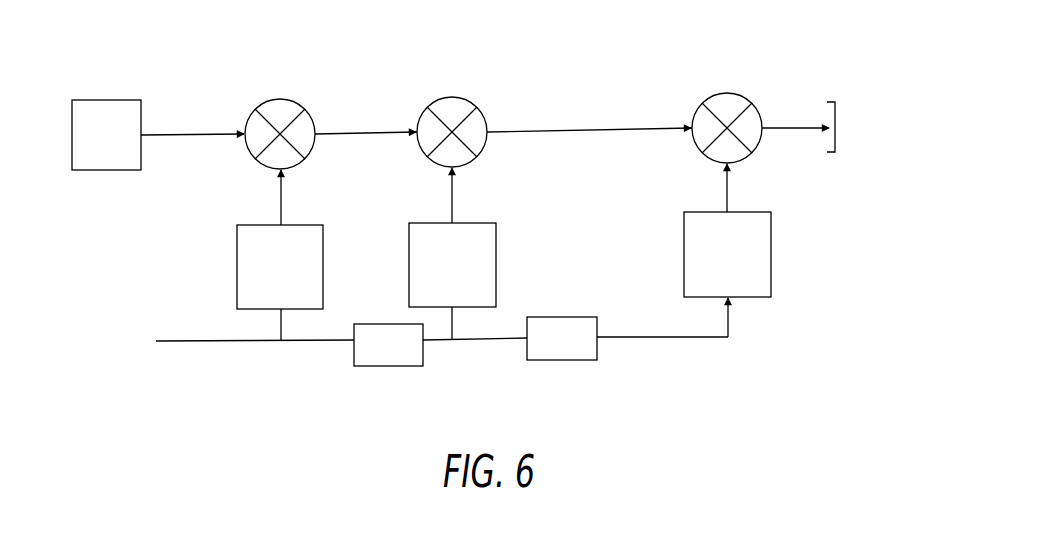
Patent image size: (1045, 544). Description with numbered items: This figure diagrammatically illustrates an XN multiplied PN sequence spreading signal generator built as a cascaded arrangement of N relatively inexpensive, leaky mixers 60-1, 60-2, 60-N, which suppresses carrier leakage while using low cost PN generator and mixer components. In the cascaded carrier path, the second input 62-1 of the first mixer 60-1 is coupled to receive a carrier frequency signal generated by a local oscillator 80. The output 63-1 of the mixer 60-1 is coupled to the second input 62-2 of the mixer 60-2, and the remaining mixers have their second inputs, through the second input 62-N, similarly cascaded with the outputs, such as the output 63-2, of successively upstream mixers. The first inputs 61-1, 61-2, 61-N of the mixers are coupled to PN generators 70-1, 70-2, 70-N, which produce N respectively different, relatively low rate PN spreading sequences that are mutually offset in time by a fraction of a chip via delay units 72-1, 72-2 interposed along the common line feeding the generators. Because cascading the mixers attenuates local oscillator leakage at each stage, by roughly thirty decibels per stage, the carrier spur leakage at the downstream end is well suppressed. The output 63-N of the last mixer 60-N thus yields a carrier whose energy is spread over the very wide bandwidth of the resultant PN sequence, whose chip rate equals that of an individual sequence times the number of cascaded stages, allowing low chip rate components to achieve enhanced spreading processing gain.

The local oscillator 80 is at (93, 100).
The mixer 60-1 is at (277, 100).
The mixer 60-2 is at (453, 97).
The mixer 60-N is at (728, 93).
The second input 62-1 is at (245, 131).
The second input 62-2 is at (418, 142).
The second input 62-N is at (692, 127).
The output 63-1 is at (320, 130).
The output 63-2 is at (487, 127).
The output 63-N is at (763, 123).
The first input 61-1 is at (272, 169).
The first input 61-2 is at (453, 167).
The first input 61-N is at (727, 163).
The PN generator 70-1 is at (237, 283).
The PN generator 70-2 is at (496, 250).
The PN generator 70-N is at (771, 240).
The delay unit 72-1 is at (370, 366).
The delay unit 72-2 is at (545, 360).